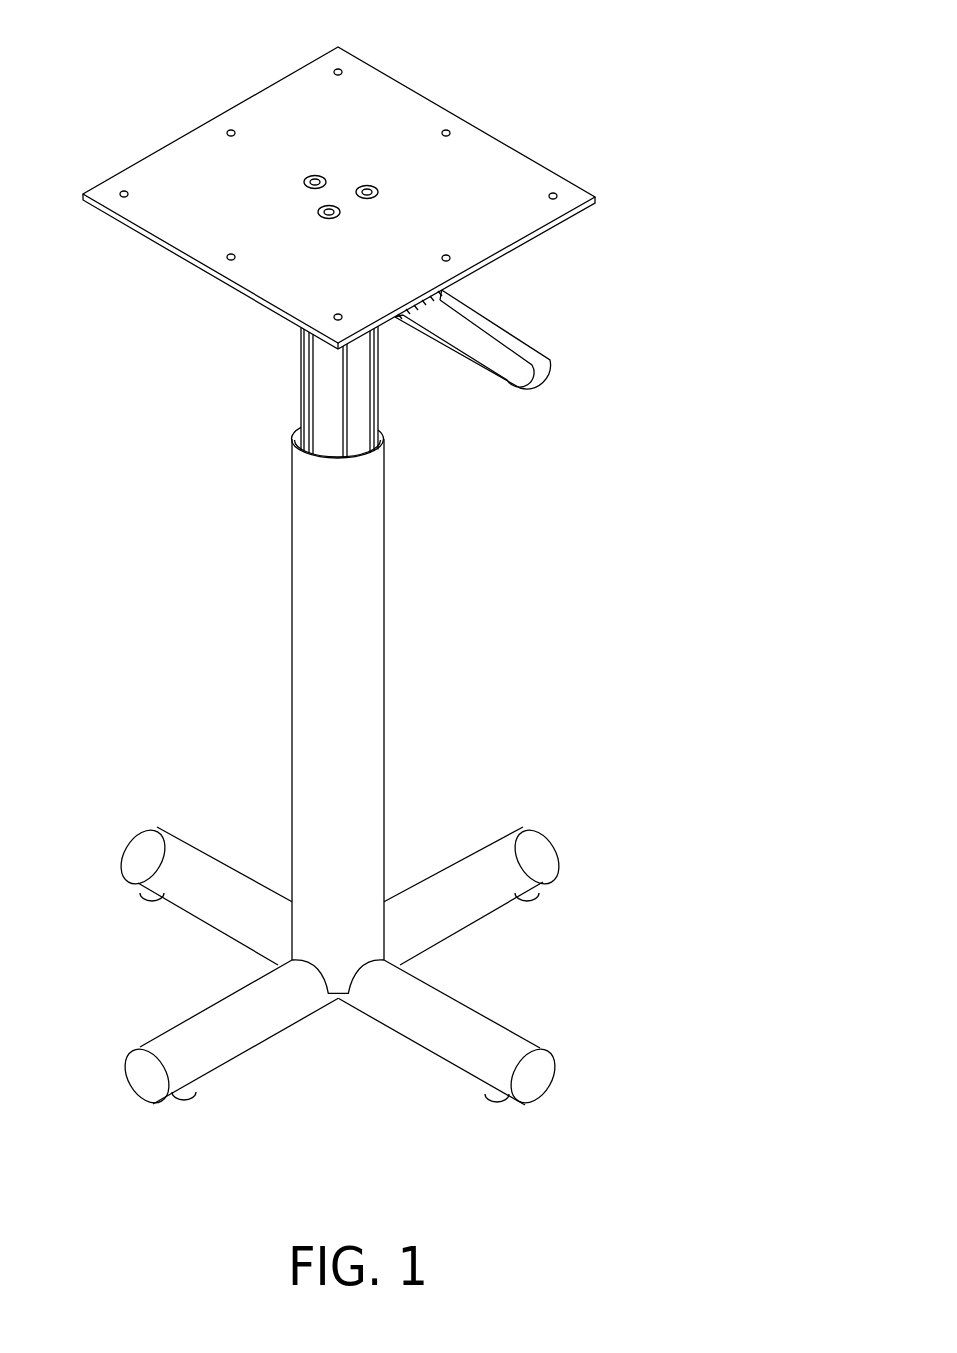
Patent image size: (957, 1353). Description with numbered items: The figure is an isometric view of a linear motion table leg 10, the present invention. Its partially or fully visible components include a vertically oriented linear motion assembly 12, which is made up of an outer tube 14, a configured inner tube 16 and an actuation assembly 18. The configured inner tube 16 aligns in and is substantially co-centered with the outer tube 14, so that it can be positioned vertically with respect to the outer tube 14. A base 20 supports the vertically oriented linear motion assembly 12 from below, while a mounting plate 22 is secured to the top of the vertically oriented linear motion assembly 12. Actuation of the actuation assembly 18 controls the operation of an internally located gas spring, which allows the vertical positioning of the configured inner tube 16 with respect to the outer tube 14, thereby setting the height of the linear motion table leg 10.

The linear motion table leg 10 is at (673, 72).
The vertically oriented linear motion assembly 12 is at (658, 163).
The outer tube 14 is at (387, 602).
The configured inner tube 16 is at (298, 387).
The actuation assembly 18 is at (525, 340).
The base 20 is at (553, 843).
The mounting plate 22 is at (177, 132).